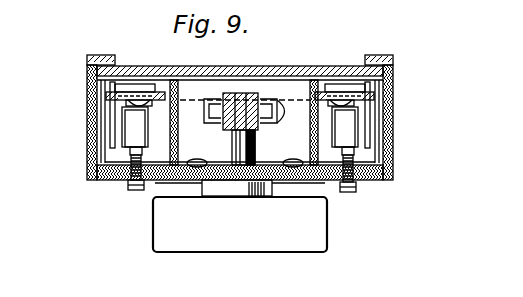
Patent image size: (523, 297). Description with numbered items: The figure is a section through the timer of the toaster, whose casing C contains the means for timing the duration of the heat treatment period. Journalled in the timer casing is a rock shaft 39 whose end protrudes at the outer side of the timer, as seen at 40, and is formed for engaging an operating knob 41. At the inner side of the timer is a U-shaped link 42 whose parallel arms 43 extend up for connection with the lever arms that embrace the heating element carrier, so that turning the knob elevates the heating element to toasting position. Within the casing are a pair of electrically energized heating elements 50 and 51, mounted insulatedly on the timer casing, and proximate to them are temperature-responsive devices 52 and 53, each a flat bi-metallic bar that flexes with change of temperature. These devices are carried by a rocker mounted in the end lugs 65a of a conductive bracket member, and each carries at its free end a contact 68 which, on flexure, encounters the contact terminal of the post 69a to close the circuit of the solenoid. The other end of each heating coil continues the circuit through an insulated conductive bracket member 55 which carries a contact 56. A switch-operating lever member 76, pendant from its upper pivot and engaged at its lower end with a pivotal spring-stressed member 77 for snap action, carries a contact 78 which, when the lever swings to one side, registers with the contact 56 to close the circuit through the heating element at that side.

The rock shaft 39 is at (300, 180).
The protruding end of rock shaft 40 is at (215, 183).
The operating knob 41 is at (152, 231).
The U-shaped link 42 is at (298, 68).
The parallel arms of U-shaped link 43 is at (100, 55).
The heating element 50 is at (108, 95).
The heating element 51 is at (400, 103).
The temperature-responsive device 52 is at (120, 141).
The temperature-responsive device 53 is at (360, 140).
The insulated conductive bracket member 55 is at (175, 90).
The contact 56 is at (215, 125).
The end lugs of bracket 65a is at (426, 122).
The contact 68 is at (122, 118).
The post 69a is at (404, 193).
The switch-operating lever member 76 is at (242, 62).
The pivotal spring-stressed member 77 is at (262, 100).
The contact 78 is at (254, 93).
The casing C is at (395, 102).